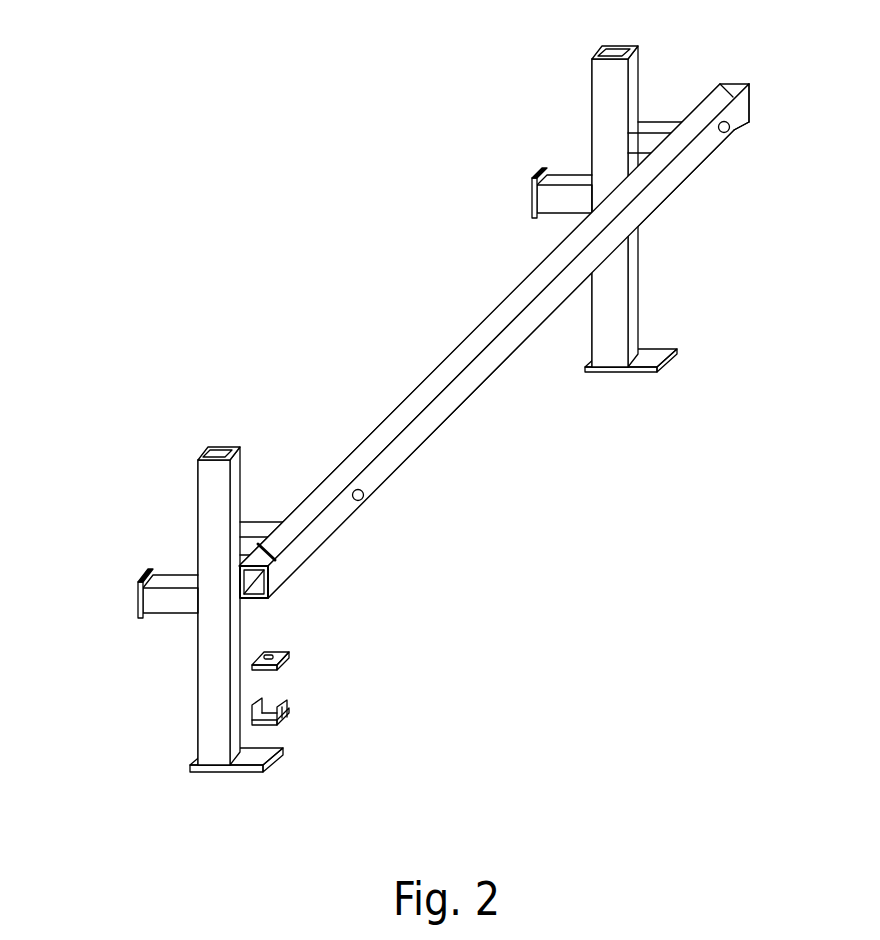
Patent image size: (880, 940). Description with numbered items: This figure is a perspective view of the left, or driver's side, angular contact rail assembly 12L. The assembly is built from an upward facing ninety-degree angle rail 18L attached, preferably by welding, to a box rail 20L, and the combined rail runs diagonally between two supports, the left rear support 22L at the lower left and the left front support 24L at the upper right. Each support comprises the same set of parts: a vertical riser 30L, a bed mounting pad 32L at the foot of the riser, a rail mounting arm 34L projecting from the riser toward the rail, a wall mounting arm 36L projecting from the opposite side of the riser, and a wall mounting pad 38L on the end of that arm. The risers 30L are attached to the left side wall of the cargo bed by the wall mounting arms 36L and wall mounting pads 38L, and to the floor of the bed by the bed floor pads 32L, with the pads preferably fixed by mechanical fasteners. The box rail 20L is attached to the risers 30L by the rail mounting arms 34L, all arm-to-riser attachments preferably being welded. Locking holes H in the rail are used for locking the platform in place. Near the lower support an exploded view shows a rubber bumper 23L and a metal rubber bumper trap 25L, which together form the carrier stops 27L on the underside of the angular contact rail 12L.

The angular contact rail assembly 12L is at (492, 414).
The upward facing 90° angle rail 18L is at (494, 341).
The box rail 20L is at (422, 432).
The left rear support 22L is at (139, 518).
The left front support 24L is at (566, 80).
The carrier stop 27L is at (242, 607).
The locking hole H is at (360, 500).
The riser 30L is at (212, 723).
The bed mounting pad 32L is at (237, 774).
The rail mounting arm 34L is at (263, 520).
The wall mounting arm 36L is at (177, 600).
The wall mounting pad 38L is at (138, 592).
The rubber bumper 23L is at (284, 662).
The metal rubber bumper trap 25L is at (297, 712).